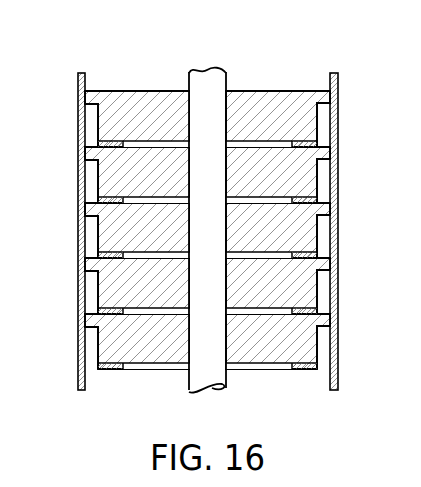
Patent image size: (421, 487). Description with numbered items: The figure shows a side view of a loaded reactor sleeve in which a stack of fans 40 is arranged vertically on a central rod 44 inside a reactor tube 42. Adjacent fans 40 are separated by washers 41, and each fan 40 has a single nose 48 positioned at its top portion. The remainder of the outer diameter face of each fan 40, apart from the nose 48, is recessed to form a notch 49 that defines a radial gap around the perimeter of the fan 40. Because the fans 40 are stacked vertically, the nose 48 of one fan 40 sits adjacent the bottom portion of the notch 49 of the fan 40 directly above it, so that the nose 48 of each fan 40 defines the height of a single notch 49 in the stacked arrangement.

The fan 40 is at (143, 100).
The washer 41 is at (110, 312).
The reactor tube 42 is at (338, 85).
The central rod 44 is at (200, 71).
The nose 48 is at (330, 208).
The notch 49 is at (93, 178).